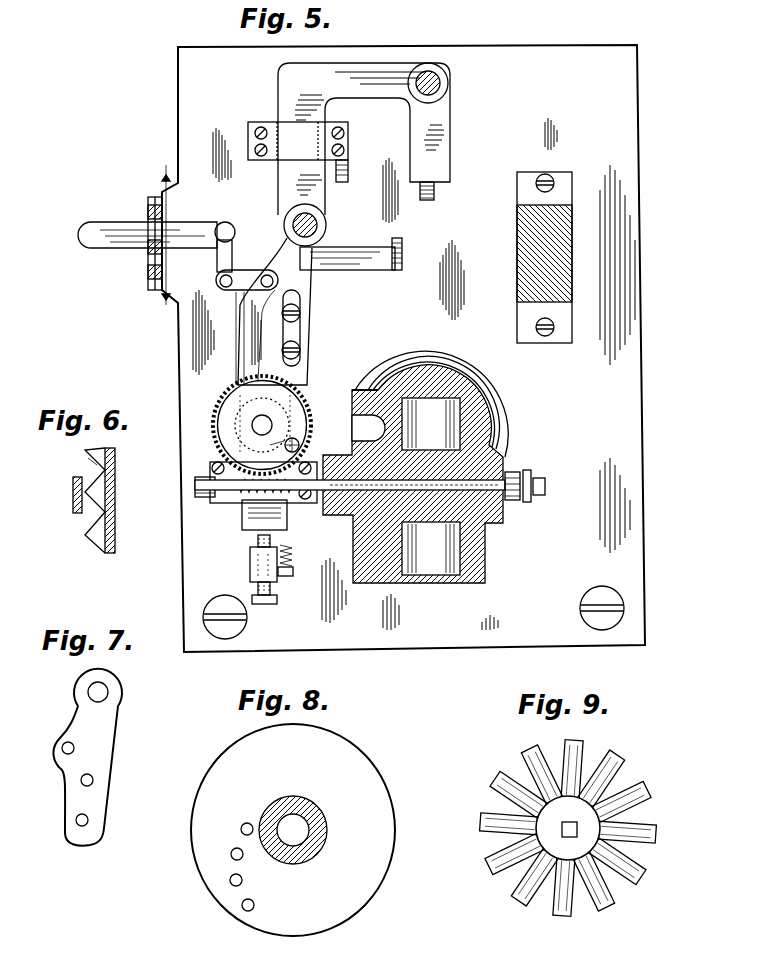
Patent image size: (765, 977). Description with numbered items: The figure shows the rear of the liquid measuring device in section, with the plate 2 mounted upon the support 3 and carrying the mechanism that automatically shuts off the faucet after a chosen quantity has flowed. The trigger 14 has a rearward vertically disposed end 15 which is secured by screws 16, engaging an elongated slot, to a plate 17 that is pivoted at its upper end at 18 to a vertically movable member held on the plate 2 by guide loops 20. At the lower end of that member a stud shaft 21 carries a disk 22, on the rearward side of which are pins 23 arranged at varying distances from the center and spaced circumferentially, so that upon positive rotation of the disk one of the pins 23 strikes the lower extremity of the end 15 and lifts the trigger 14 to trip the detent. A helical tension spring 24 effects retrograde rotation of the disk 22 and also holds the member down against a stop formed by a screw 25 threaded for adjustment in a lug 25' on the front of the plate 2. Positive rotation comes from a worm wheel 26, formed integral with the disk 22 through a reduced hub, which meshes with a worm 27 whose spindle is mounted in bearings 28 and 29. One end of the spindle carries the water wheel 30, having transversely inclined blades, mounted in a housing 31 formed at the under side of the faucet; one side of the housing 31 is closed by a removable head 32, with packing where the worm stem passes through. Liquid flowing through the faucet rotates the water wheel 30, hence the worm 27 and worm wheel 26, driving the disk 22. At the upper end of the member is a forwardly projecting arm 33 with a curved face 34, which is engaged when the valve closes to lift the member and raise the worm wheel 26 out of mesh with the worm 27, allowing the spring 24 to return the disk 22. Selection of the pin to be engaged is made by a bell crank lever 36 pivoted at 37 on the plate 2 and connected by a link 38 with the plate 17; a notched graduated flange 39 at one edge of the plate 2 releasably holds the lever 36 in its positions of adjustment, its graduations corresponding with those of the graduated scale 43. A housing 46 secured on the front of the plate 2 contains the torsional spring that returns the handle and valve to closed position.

In FIG. 5, the plate 2 is at (640, 437).
In FIG. 6, the plate 2 is at (117, 464).
In FIG. 5, the support 3 is at (157, 249).
In FIG. 5, the trigger 14 is at (403, 250).
In FIG. 5, the rearward vertically disposed end of the trigger 15 is at (280, 333).
In FIG. 5, the screws 16 is at (302, 348).
In FIG. 5, the plate 17 is at (273, 295).
In FIG. 7, the plate 17 is at (100, 748).
In FIG. 5, the pivot 18 is at (327, 227).
In FIG. 7, the pivot 18 is at (109, 692).
In FIG. 5, the guide loops 20 is at (298, 522).
In FIG. 5, the stud shaft 21 is at (255, 428).
In FIG. 5, the disk 22 is at (306, 400).
In FIG. 8, the disk 22 is at (382, 858).
In FIG. 5, the pins 23 is at (300, 443).
In FIG. 8, the pins 23 is at (242, 903).
In FIG. 5, the helical tension spring 24 is at (292, 555).
In FIG. 5, the screw 25 is at (263, 580).
In FIG. 5, the lug 25' is at (305, 600).
In FIG. 5, the worm wheel 26 is at (236, 410).
In FIG. 5, the worm 27 is at (233, 503).
In FIG. 5, the bearing 28 is at (200, 490).
In FIG. 5, the bearing 29 is at (520, 502).
In FIG. 5, the water wheel 30 is at (440, 430).
In FIG. 9, the water wheel 30 is at (655, 830).
In FIG. 5, the housing 31 is at (470, 443).
In FIG. 5, the removable head 32 is at (352, 388).
In FIG. 5, the forwardly projecting arm 33 is at (440, 114).
In FIG. 5, the curved face 34 is at (436, 190).
In FIG. 5, the bell crank lever 36 is at (192, 247).
In FIG. 6, the bell crank lever 36 is at (73, 500).
In FIG. 5, the pivot 37 is at (228, 224).
In FIG. 5, the link 38 is at (254, 276).
In FIG. 5, the notched graduated flange 39 is at (150, 214).
In FIG. 6, the notched graduated flange 39 is at (88, 460).
In FIG. 5, the graduated scale 43 is at (268, 453).
In FIG. 5, the housing 46 is at (572, 236).